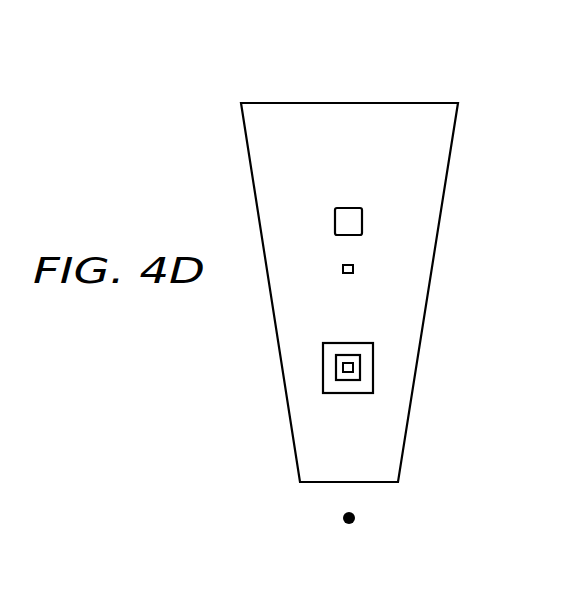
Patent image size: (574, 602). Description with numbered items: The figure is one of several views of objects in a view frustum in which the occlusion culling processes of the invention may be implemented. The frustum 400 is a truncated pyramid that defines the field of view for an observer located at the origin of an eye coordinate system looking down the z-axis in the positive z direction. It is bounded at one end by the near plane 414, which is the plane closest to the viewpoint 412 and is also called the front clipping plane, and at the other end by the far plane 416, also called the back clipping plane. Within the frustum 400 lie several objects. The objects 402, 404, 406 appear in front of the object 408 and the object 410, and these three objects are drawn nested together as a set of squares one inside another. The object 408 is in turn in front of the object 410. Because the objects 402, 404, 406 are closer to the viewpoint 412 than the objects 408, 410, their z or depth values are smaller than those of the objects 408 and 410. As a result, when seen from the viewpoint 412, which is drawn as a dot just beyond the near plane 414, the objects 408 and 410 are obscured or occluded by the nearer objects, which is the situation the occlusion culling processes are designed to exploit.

The frustum 400 is at (184, 186).
The object 402 is at (353, 367).
The object 404 is at (323, 366).
The object 406 is at (349, 363).
The object 408 is at (356, 268).
The object 410 is at (350, 208).
The viewpoint 412 is at (342, 518).
The near plane 414 is at (380, 494).
The far plane 416 is at (405, 84).